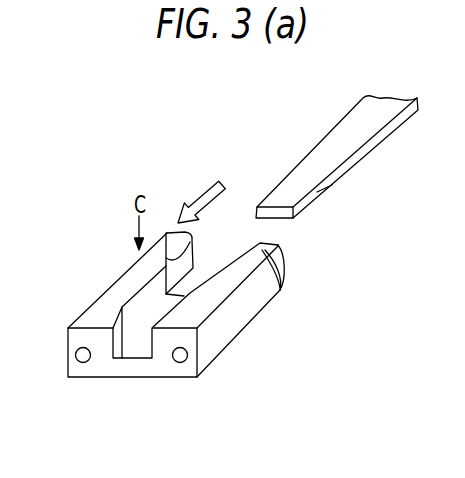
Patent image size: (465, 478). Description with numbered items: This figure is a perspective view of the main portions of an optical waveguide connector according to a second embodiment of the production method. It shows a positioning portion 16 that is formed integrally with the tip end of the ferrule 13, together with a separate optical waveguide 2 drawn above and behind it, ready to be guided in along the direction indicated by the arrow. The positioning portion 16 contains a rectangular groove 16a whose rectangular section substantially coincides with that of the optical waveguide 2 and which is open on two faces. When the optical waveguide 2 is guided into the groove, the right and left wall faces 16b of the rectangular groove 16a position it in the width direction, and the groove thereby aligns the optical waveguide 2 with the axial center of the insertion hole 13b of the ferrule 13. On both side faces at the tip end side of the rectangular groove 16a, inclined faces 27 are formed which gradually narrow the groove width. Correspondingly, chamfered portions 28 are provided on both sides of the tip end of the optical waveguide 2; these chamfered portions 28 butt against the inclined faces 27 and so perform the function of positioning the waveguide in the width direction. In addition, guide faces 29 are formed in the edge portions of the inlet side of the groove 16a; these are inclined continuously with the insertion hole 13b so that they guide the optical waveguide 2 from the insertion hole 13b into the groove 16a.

The optical waveguide 2 is at (347, 153).
The ferrule 13 is at (124, 259).
The insertion hole 13b is at (247, 253).
The positioning portion 16 is at (85, 311).
The rectangular groove 16a is at (222, 264).
The right and left wall faces 16b is at (138, 308).
The inclined faces 27 is at (123, 330).
The chamfered portions 28 is at (257, 204).
The guide faces 29 is at (190, 258).